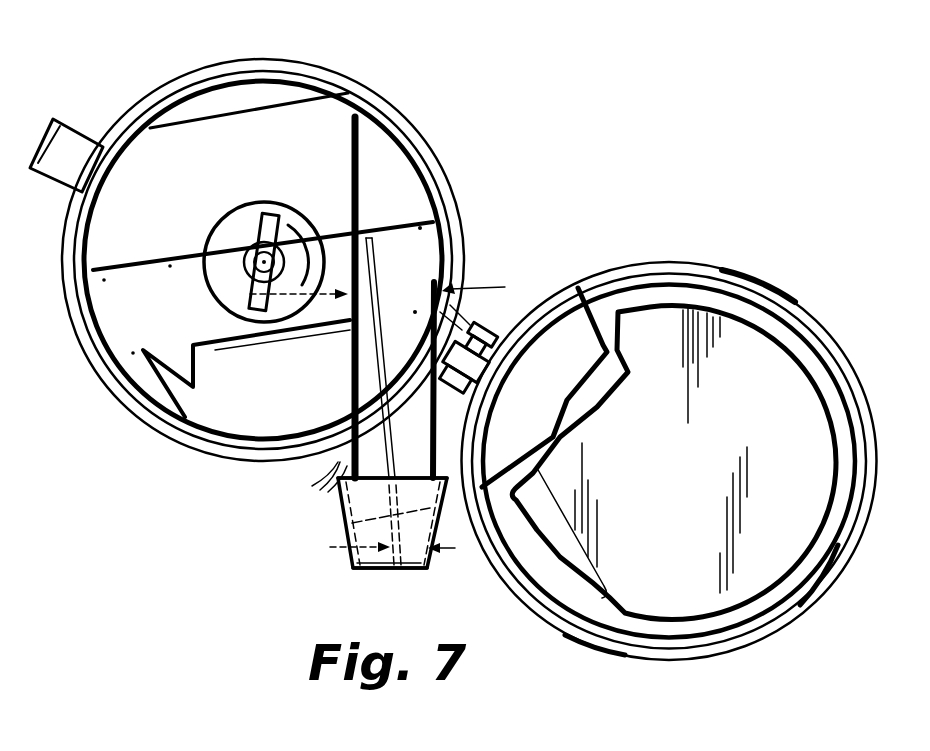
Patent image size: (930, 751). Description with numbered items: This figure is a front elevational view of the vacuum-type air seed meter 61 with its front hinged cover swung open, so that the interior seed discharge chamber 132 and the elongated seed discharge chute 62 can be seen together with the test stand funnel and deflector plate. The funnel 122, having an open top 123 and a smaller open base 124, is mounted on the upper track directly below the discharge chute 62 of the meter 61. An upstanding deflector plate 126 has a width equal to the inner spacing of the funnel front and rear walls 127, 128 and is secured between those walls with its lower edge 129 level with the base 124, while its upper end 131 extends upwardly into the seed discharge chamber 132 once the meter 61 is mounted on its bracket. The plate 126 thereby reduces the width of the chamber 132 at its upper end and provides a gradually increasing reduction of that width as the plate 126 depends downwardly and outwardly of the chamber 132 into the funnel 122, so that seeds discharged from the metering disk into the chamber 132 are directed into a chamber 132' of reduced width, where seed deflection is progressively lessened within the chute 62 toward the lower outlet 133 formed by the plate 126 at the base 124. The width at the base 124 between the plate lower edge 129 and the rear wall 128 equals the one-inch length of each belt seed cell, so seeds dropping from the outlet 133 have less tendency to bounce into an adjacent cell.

The air seed meter 61 is at (160, 75).
The seed discharge chute 62 is at (343, 459).
The funnel 122 is at (278, 549).
The open top 123 is at (352, 473).
The open base 124 is at (370, 573).
The deflector plate 126 is at (372, 313).
The front wall 127 is at (352, 562).
The rear wall 128 is at (428, 572).
The lower edge 129 is at (396, 573).
The upper end 131 is at (373, 247).
The seed discharge chamber 132 is at (240, 368).
The reduced-width chamber 132' is at (502, 338).
The lower outlet 133 is at (413, 572).